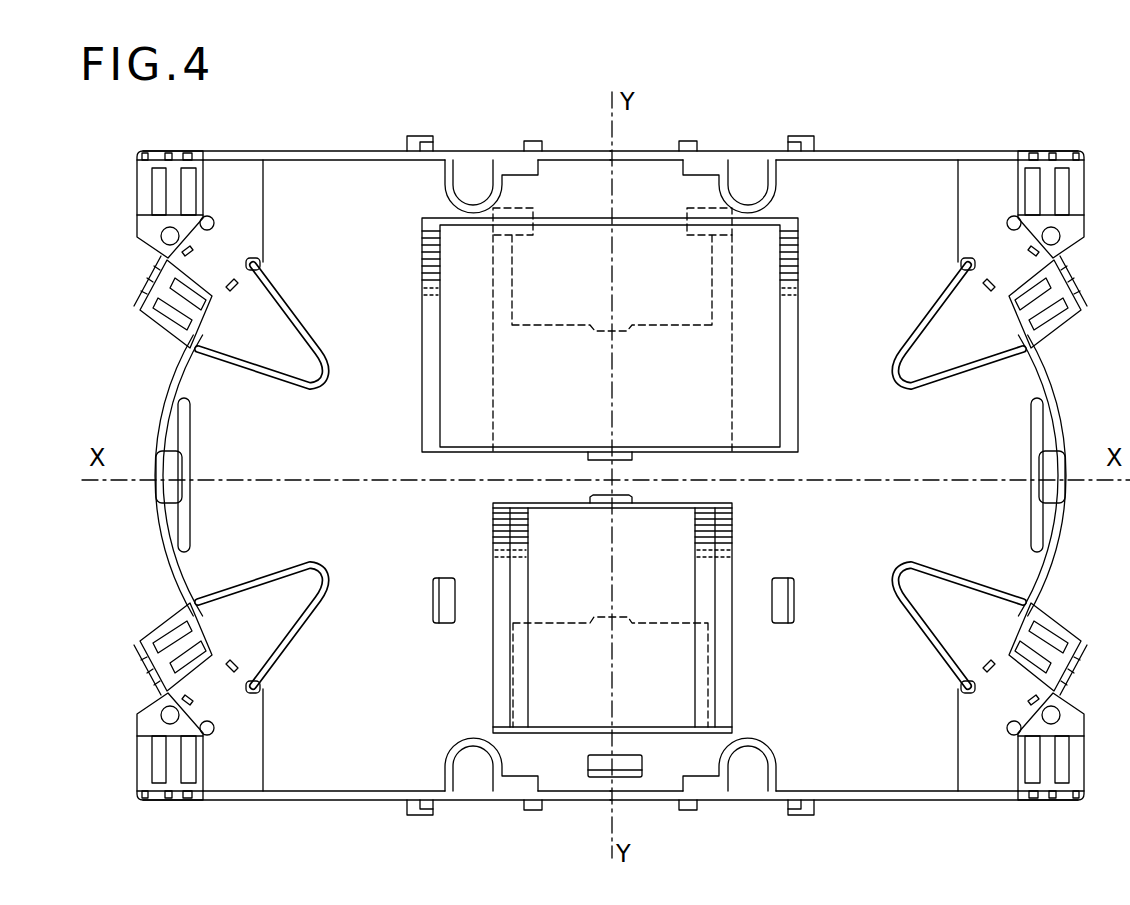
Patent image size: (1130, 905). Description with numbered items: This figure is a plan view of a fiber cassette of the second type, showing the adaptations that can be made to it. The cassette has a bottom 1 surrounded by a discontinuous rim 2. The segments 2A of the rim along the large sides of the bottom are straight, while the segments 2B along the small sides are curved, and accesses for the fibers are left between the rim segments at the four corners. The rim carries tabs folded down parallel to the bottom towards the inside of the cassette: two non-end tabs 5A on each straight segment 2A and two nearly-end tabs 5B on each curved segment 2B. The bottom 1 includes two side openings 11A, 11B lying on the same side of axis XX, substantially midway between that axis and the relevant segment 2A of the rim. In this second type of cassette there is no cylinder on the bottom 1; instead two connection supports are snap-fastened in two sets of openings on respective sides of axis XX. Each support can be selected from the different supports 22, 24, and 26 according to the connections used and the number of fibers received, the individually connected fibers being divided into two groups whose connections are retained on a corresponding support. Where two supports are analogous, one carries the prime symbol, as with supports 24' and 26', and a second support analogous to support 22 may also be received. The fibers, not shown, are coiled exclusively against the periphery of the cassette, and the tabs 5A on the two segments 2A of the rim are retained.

The bottom 1 is at (235, 447).
The discontinuous rim 2 is at (937, 150).
The rim segments along the large sides 2A is at (863, 158).
The rim segments along the small sides 2B is at (1050, 378).
The non-end tabs 5A is at (468, 183).
The nearly-end tabs 5B is at (247, 347).
The side opening 11A is at (433, 592).
The side opening 11B is at (793, 598).
The connection support 22 is at (800, 326).
The connection support 24 is at (676, 343).
The connection support 24' is at (649, 614).
The connection support 26 is at (676, 269).
The connection support 26' is at (659, 672).